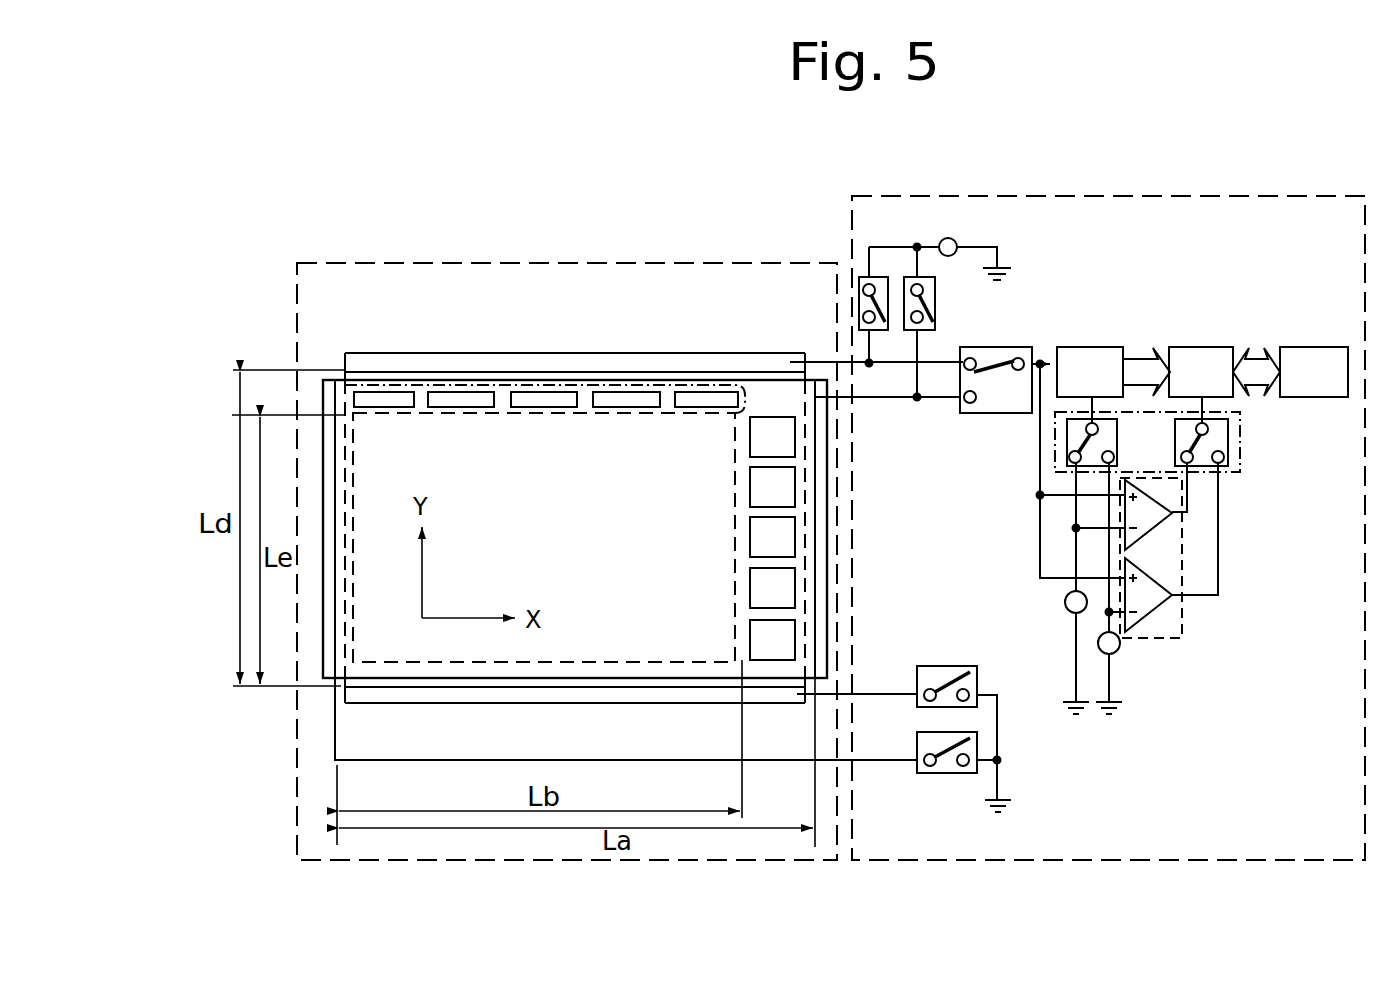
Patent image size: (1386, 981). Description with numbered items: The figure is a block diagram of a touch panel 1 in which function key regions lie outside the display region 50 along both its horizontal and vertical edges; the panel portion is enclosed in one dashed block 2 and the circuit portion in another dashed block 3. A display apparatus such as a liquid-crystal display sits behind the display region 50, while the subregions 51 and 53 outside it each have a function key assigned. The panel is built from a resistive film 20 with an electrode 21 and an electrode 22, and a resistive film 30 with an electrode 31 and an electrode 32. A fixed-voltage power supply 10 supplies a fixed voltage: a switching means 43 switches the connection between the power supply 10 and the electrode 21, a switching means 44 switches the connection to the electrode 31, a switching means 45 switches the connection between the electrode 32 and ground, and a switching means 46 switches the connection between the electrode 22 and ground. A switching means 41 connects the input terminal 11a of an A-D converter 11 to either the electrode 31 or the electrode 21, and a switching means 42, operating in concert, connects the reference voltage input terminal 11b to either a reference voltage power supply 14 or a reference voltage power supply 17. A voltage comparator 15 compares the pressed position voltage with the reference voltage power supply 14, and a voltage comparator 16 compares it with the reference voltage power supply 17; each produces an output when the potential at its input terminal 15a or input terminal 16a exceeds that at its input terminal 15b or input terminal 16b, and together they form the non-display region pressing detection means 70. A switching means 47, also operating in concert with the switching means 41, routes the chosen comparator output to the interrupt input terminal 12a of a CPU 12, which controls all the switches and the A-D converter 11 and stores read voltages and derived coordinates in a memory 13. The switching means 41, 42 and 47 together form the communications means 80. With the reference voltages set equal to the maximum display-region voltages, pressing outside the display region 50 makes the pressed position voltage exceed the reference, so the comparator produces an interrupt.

The touch panel 1 is at (730, 147).
The touch panel unit 2 is at (576, 263).
The control circuit unit 3 is at (851, 228).
The fixed-voltage power supply 10 is at (957, 241).
The A-D converter 11 is at (1085, 347).
The input terminal of the A-D converter 11a is at (1047, 360).
The reference voltage input terminal of the A-D converter 11b is at (1009, 413).
The CPU 12 is at (1185, 347).
The interrupt input terminal of the CPU 12a is at (1215, 402).
The memory 13 is at (1290, 347).
The reference voltage power supply 14 is at (1066, 592).
The voltage comparator 15 is at (1157, 527).
The input terminal of voltage comparator 15 15a is at (1122, 499).
The input terminal of voltage comparator 15 15b is at (1122, 531).
The voltage comparator 16 is at (1157, 623).
The input terminal of voltage comparator 16 16a is at (1122, 580).
The input terminal of voltage comparator 16 16b is at (1098, 622).
The reference voltage power supply 17 is at (1122, 645).
The resistive film 20 is at (323, 450).
The electrode 21 is at (824, 436).
The electrode 22 is at (323, 397).
The resistive film 30 is at (372, 352).
The electrode 31 is at (440, 372).
The electrode 32 is at (600, 697).
The switching means 41 is at (988, 346).
The switching means 42 is at (1118, 432).
The switching means 43 is at (936, 304).
The switching means 44 is at (882, 277).
The switching means 45 is at (938, 666).
The switching means 46 is at (935, 773).
The switching means 47 is at (1229, 453).
The display region 50 is at (745, 400).
The subregion 51 is at (795, 630).
The subregion 53 is at (707, 391).
The non-display region pressing detection means 70 is at (1181, 613).
The communications means 80 is at (1241, 441).